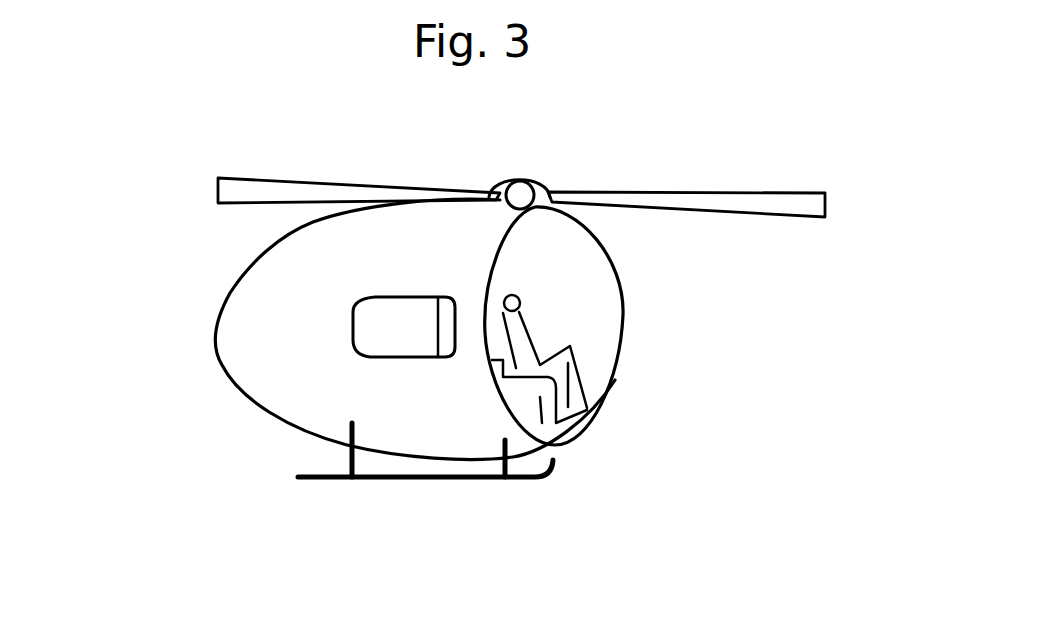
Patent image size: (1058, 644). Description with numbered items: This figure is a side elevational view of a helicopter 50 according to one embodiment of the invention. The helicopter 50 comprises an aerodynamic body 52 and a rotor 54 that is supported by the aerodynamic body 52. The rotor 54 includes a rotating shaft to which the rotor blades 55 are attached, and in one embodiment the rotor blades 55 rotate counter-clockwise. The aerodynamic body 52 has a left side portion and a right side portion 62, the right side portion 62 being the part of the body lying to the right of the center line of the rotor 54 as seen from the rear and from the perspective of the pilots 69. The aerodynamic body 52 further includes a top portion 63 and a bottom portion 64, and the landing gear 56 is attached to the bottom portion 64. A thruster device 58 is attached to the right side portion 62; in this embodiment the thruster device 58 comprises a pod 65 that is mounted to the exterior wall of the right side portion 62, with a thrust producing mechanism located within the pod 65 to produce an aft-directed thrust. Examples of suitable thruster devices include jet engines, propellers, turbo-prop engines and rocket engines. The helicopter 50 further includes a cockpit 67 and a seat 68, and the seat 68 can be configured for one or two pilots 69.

The helicopter 50 is at (172, 277).
The aerodynamic body 52 is at (243, 271).
The rotor 54 is at (552, 203).
The rotor blades 55 is at (827, 200).
The landing gear 56 is at (523, 480).
The thruster device 58 is at (377, 297).
The right side portion 62 is at (400, 373).
The top portion 63 is at (347, 207).
The bottom portion 64 is at (398, 447).
The pod 65 is at (413, 295).
The cockpit 67 is at (603, 317).
The seat 68 is at (540, 402).
The pilots 69 is at (527, 327).